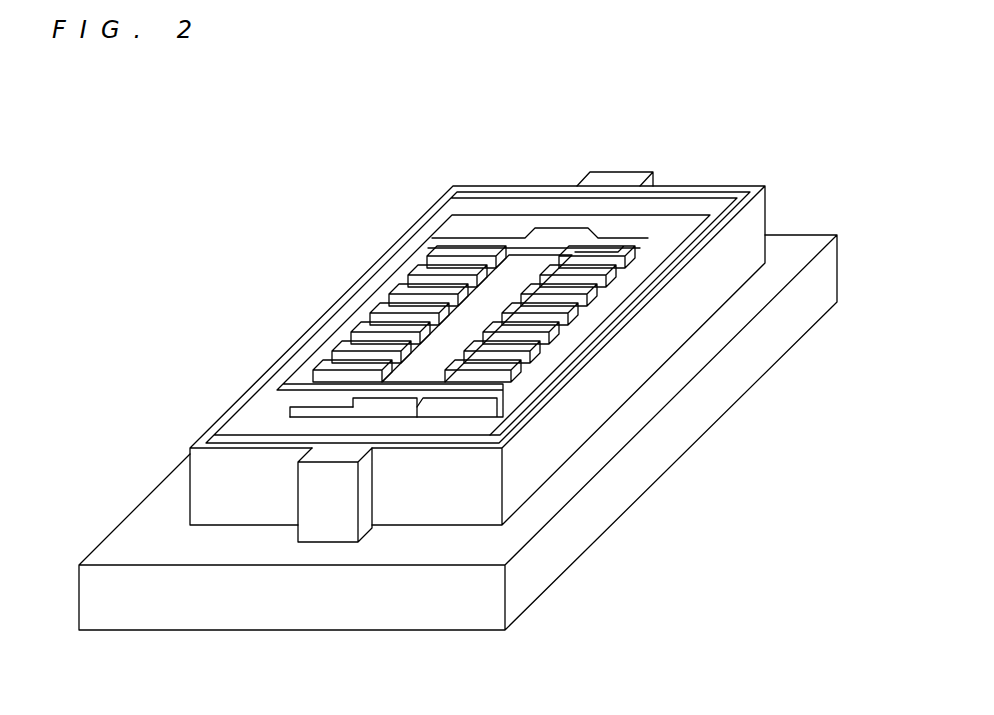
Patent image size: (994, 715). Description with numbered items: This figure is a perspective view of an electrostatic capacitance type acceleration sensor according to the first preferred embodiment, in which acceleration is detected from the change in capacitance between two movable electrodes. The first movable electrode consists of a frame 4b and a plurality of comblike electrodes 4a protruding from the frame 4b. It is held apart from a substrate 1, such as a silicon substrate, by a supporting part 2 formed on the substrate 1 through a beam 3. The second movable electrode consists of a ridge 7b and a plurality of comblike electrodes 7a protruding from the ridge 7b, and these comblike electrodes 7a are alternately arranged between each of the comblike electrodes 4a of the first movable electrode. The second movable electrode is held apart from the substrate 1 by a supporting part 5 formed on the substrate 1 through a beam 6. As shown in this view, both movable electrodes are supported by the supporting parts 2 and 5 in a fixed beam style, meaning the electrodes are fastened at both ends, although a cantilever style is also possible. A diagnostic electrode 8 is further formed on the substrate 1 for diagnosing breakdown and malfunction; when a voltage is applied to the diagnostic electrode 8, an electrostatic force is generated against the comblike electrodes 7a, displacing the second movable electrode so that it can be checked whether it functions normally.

The substrate 1 is at (192, 613).
The supporting part 2 is at (640, 170).
The beam 3 is at (770, 210).
The comblike electrodes 4a is at (585, 323).
The frame 4b is at (600, 407).
The supporting part 5 is at (325, 406).
The beam 6 is at (387, 400).
The comblike electrodes 7a is at (548, 275).
The ridge 7b is at (512, 265).
The diagnostic electrode 8 is at (624, 263).